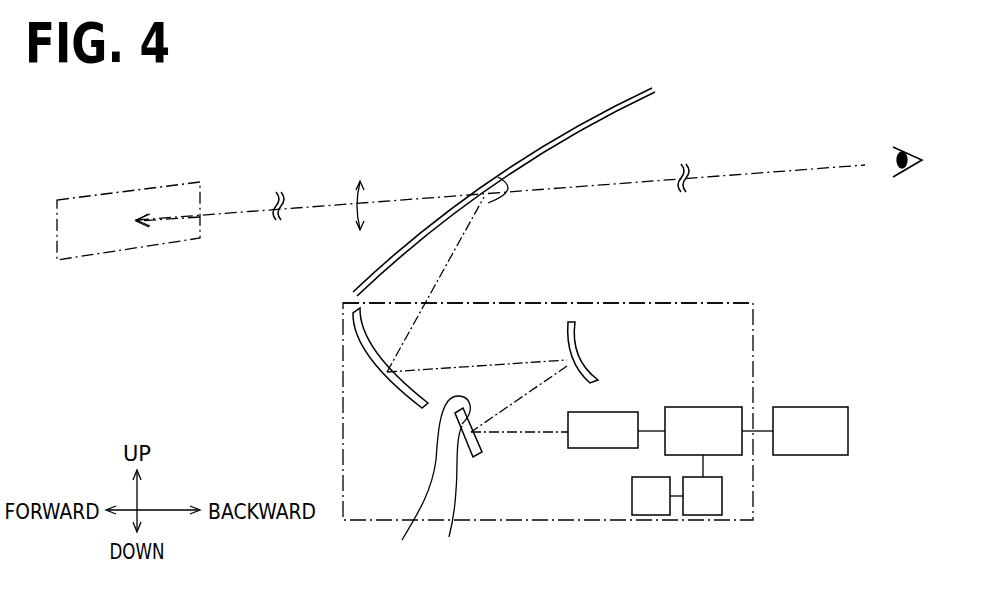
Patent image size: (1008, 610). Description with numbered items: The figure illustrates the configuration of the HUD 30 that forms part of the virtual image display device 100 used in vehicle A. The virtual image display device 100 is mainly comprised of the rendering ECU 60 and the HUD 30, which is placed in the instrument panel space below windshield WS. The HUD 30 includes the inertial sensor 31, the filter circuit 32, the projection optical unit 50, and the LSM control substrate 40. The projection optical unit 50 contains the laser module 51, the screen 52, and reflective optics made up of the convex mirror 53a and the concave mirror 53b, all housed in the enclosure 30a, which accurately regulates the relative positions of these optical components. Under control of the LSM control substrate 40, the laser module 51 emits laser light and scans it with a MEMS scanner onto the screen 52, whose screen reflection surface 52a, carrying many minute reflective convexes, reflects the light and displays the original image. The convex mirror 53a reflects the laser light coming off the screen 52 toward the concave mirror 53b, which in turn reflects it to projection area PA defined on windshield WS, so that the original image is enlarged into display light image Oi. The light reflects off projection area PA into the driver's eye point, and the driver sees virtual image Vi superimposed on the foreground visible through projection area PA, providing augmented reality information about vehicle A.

The virtual image Vi is at (80, 260).
The windshield WS is at (578, 127).
The vehicle A is at (621, 87).
The projection area PA is at (498, 177).
The display light image Oi is at (488, 200).
The HUD 30 is at (737, 346).
The enclosure 30a is at (722, 302).
The virtual image display device 100 is at (813, 305).
The concave mirror 53b is at (356, 336).
The convex mirror 53a is at (574, 323).
The projection optical unit 50 is at (384, 407).
The screen 52 is at (449, 537).
The screen reflection surface 52a is at (402, 540).
The laser module 51 is at (585, 449).
The LSM control substrate 40 is at (733, 457).
The rendering ECU 60 is at (810, 405).
The inertial sensor 31 is at (662, 517).
The filter circuit 32 is at (714, 516).